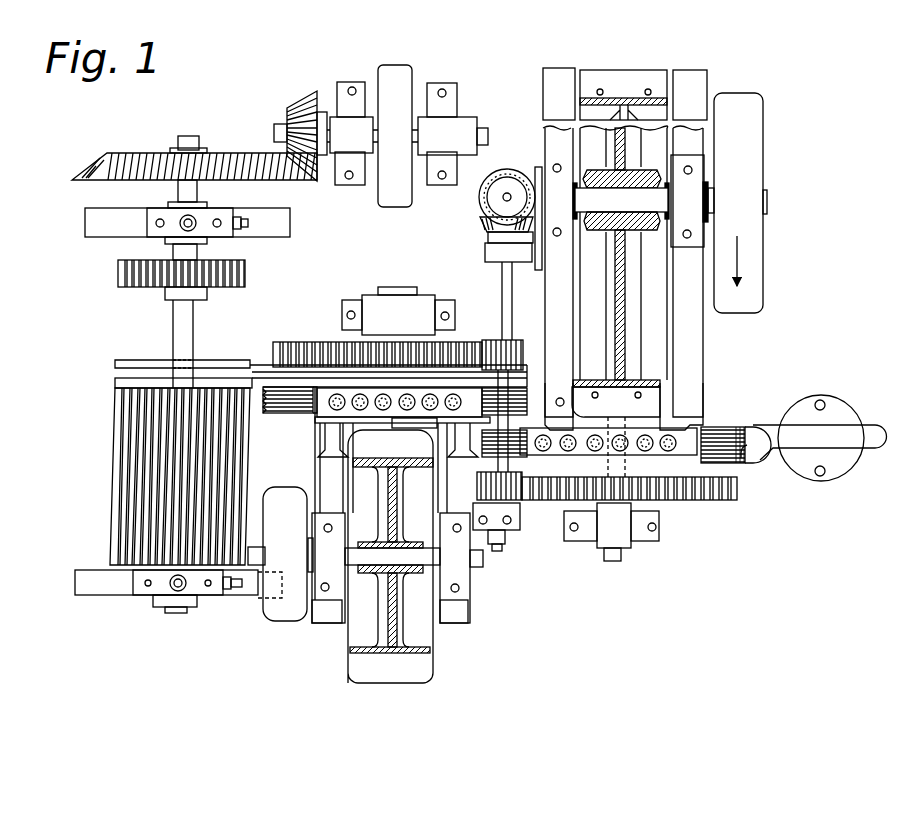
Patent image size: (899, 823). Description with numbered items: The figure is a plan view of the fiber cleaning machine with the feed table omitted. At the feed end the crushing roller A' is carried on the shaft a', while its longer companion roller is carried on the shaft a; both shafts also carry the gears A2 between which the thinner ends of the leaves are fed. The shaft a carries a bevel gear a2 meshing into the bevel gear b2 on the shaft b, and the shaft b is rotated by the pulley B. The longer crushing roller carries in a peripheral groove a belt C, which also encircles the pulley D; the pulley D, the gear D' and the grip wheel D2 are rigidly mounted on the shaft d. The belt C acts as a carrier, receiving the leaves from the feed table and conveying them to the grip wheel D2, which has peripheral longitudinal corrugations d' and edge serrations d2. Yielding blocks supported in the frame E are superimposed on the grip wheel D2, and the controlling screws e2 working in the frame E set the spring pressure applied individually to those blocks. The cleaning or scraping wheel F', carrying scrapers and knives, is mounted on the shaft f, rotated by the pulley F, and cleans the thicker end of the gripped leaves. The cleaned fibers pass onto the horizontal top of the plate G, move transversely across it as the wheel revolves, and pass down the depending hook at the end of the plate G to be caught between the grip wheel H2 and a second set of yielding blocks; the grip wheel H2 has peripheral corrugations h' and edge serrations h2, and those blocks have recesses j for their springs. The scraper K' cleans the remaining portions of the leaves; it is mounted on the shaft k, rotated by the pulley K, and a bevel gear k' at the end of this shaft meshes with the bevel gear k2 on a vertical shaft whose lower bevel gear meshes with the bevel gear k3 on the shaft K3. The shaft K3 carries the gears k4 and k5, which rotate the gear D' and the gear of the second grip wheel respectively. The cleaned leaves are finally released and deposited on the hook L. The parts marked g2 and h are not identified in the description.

The shaft a is at (177, 198).
The bevel gear a2 is at (225, 160).
The shaft a' is at (176, 337).
The crushing roller A' is at (178, 475).
The gears A2 is at (245, 271).
The shaft b is at (274, 131).
The bevel gear b2 is at (300, 107).
The pulley B is at (407, 136).
The belt C is at (321, 369).
The shaft d is at (398, 300).
The pulley D is at (192, 343).
The gear D' is at (377, 342).
The corrugations d' is at (262, 415).
The serrations d2 is at (286, 413).
The grip wheel D2 is at (302, 413).
The frame E is at (316, 406).
The controlling screws e2 is at (422, 402).
The pulley F is at (285, 554).
The cleaning or scraping wheel F' is at (395, 553).
The shaft f is at (392, 557).
The plate G is at (413, 428).
The shaft k is at (621, 225).
The bevel gear k' is at (529, 206).
The bevel gear k2 is at (488, 200).
The bevel gear k3 is at (487, 232).
The pulley K is at (655, 242).
The scraper K' is at (624, 405).
The shaft K3 is at (505, 288).
The gear k4 is at (513, 346).
The gear k5 is at (518, 525).
The lower roller carriage g2 is at (563, 455).
The shaft and bearing h is at (611, 489).
The recesses j is at (680, 455).
The grip wheel H2 is at (722, 447).
The corrugations h' is at (763, 464).
The serrations h2 is at (738, 463).
The hook L is at (820, 438).